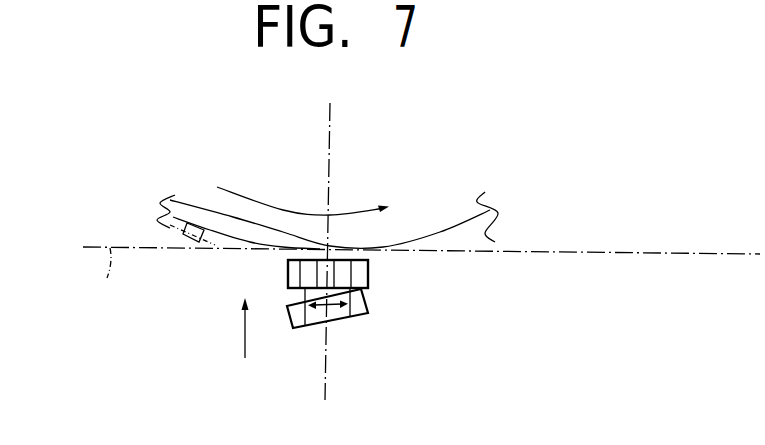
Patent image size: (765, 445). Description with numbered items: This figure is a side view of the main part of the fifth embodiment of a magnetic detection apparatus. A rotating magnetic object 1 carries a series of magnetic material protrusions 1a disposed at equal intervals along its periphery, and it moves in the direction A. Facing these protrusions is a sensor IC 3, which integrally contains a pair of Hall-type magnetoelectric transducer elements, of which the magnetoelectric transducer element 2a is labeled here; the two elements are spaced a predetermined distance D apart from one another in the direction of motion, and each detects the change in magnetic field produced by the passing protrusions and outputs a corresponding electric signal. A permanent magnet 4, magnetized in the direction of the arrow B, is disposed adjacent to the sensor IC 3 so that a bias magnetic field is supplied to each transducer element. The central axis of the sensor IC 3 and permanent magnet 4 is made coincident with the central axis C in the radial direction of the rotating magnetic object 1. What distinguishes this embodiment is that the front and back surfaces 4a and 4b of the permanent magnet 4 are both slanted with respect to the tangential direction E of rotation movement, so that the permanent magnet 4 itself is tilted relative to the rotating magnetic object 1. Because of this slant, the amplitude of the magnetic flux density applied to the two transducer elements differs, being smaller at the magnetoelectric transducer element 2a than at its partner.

The rotating magnetic object 1 is at (162, 227).
The magnetic material protrusions 1a is at (182, 238).
The magnetoelectric transducer element 2a is at (288, 268).
The sensor IC 3 is at (368, 265).
The permanent magnet 4 is at (370, 298).
The front surface of the permanent magnet 4a is at (287, 302).
The back surface of the permanent magnet 4b is at (357, 315).
The direction of motion of the rotating magnetic object A is at (255, 203).
The magnetization direction of the permanent magnet B is at (243, 338).
The central axis in a radial direction C is at (326, 368).
The predetermined distance between transducer elements D is at (318, 310).
The tangential direction of rotation movement E is at (102, 275).